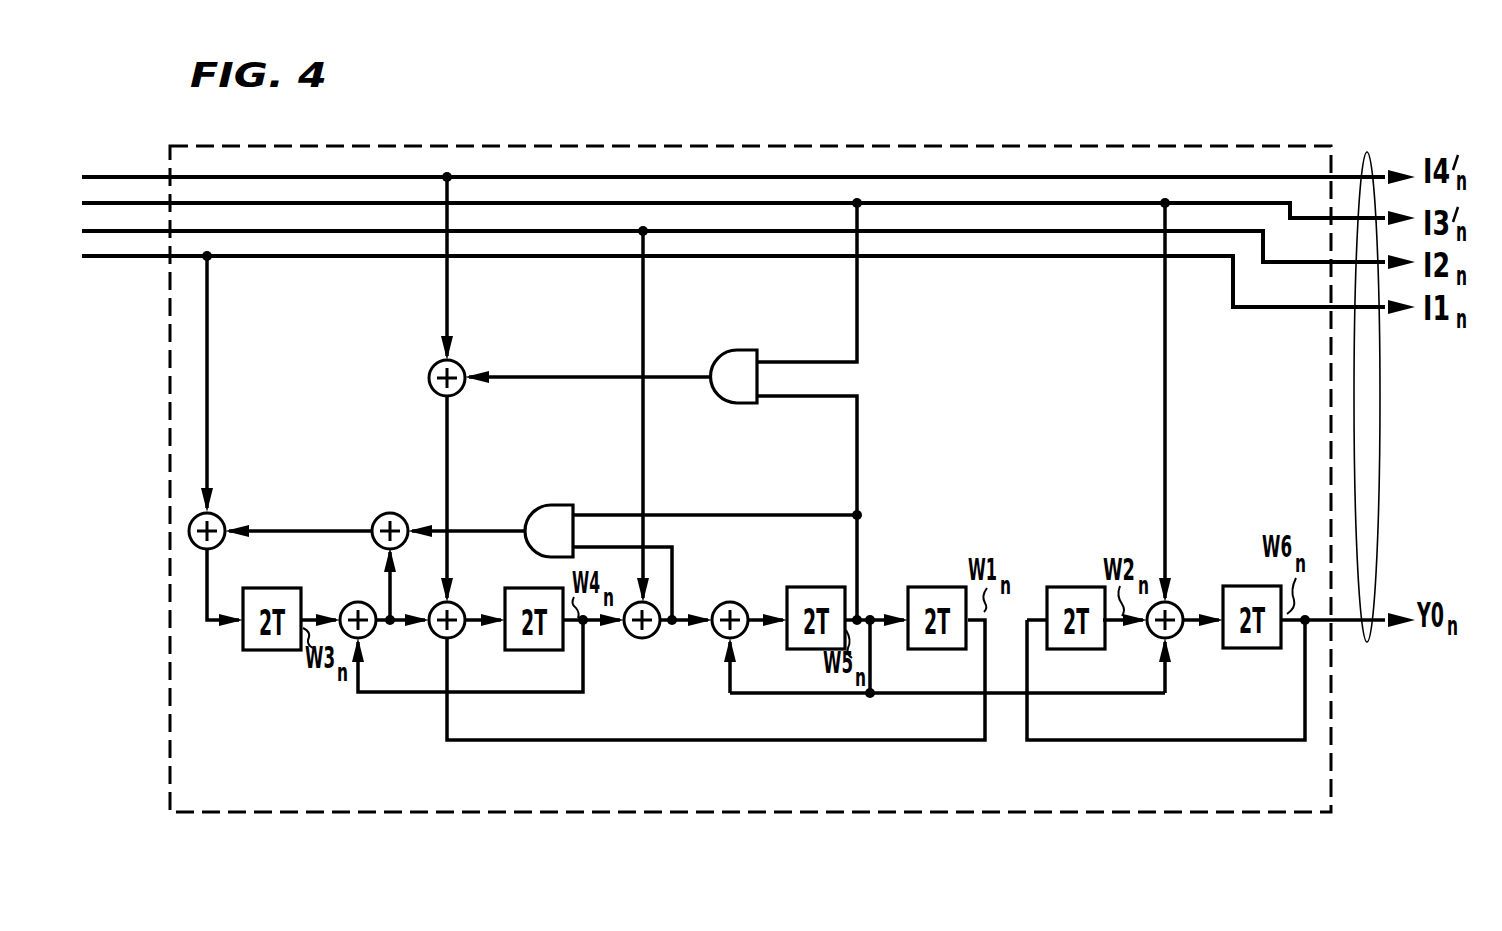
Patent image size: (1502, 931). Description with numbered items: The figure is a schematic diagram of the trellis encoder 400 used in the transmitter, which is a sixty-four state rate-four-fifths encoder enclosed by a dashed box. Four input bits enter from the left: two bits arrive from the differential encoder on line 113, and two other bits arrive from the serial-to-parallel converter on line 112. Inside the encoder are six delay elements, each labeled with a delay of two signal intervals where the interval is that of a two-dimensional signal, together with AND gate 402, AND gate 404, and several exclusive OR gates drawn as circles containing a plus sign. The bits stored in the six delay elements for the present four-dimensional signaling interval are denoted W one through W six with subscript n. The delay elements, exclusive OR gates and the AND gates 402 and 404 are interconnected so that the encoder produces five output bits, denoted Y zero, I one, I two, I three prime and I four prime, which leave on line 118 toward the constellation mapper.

The line 113 is at (127, 207).
The line 112 is at (135, 233).
The line 118 is at (1366, 155).
The trellis encoder 400 is at (170, 742).
The AND gate 402 is at (552, 508).
The AND gate 404 is at (718, 364).